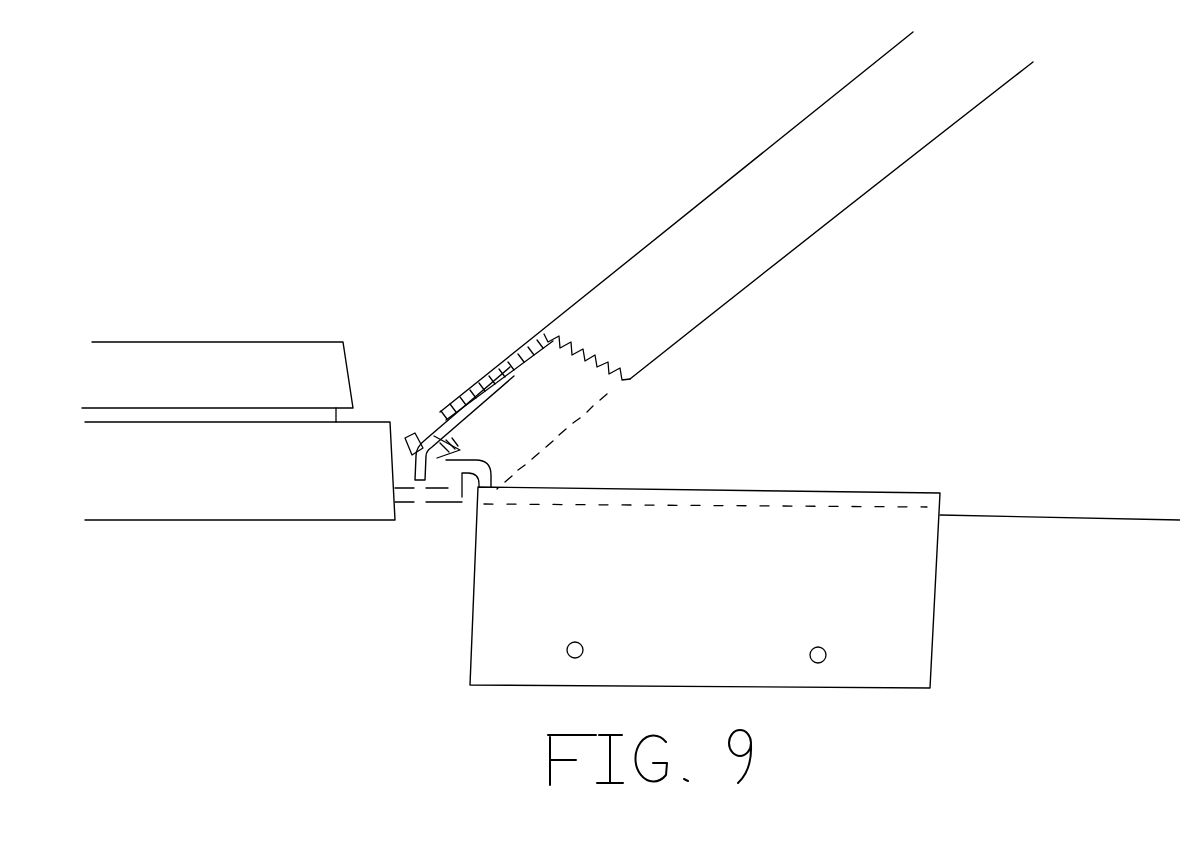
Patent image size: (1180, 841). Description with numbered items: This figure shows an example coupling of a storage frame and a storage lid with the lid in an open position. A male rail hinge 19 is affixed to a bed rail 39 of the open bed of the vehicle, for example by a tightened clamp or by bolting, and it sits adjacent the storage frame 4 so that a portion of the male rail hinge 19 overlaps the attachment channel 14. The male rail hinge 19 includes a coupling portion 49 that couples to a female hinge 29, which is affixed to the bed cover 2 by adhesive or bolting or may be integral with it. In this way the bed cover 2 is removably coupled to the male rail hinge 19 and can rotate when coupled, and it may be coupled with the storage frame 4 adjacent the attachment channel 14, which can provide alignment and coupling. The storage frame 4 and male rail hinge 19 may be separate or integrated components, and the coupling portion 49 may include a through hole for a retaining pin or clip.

The bed cover 2 is at (716, 204).
The storage frame 4 is at (163, 502).
The attachment channel 14 is at (428, 502).
The male rail hinge 19 is at (913, 605).
The female hinge 29 is at (425, 432).
The bed rail 39 is at (1022, 517).
The coupling portion 49 is at (405, 435).